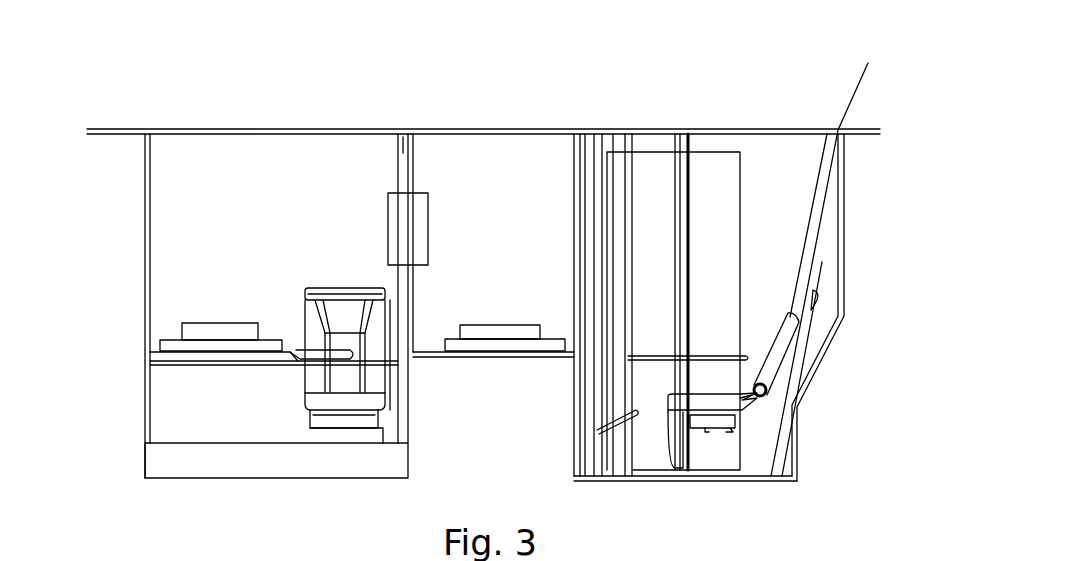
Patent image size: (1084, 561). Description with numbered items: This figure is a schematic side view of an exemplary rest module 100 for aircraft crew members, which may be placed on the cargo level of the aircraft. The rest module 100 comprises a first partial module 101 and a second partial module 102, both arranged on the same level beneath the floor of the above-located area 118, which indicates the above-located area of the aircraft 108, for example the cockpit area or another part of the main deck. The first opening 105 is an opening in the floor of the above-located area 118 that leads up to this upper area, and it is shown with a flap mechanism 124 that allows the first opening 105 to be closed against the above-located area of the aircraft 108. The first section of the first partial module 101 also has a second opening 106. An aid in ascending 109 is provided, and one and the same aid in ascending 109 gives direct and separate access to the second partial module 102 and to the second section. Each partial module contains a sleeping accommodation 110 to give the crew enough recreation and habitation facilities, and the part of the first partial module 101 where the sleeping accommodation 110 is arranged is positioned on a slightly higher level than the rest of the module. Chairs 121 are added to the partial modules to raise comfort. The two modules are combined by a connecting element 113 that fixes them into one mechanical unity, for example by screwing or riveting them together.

The rest module 100 is at (137, 87).
The floor of the above-located area 118 is at (108, 128).
The second partial module 102 is at (146, 282).
The connecting element 113 is at (388, 193).
The sleeping accommodation 110 is at (222, 328).
The chairs 121 is at (353, 287).
The first partial module 101 is at (716, 129).
The first opening 105 is at (800, 129).
The aid in ascending 109 is at (817, 226).
The flap mechanism 124 is at (852, 98).
The above-located area of the aircraft 108 is at (872, 86).
The second opening 106 is at (713, 468).